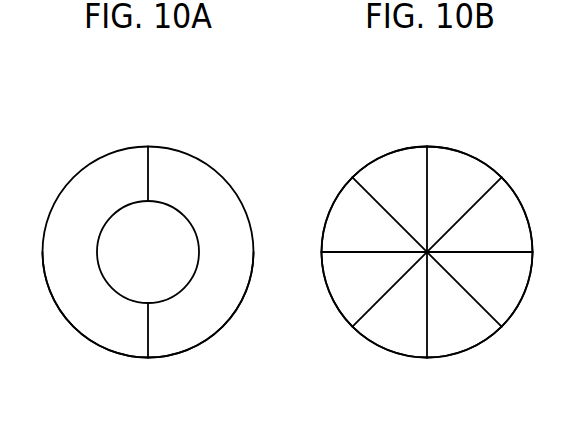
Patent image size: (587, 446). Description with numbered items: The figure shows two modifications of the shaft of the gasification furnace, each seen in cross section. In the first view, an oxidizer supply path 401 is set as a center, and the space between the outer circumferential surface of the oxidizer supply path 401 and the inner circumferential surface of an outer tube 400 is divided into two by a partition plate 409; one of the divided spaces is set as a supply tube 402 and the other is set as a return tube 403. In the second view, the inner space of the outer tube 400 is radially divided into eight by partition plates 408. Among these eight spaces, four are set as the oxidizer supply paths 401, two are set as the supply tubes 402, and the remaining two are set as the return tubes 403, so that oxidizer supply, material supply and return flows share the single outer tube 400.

In FIG. 10A, the outer tube 400 is at (83, 168).
In FIG. 10B, the outer tube 400 is at (410, 147).
In FIG. 10A, the oxidizer supply path 401 is at (157, 243).
In FIG. 10B, the oxidizer supply path 401 is at (458, 184).
In FIG. 10A, the supply tube 402 is at (190, 330).
In FIG. 10B, the supply tube 402 is at (381, 183).
In FIG. 10A, the return tube 403 is at (93, 326).
In FIG. 10B, the return tube 403 is at (508, 238).
In FIG. 10B, the partition plate 408 is at (428, 173).
In FIG. 10A, the partition plate 409 is at (149, 170).
In FIG. 10B, the partition plate 409 is at (426, 338).